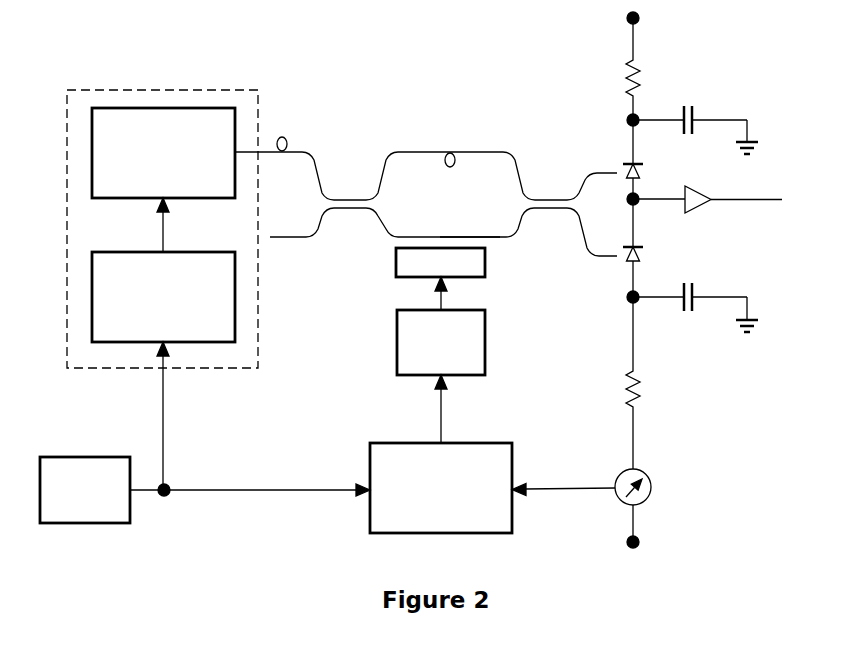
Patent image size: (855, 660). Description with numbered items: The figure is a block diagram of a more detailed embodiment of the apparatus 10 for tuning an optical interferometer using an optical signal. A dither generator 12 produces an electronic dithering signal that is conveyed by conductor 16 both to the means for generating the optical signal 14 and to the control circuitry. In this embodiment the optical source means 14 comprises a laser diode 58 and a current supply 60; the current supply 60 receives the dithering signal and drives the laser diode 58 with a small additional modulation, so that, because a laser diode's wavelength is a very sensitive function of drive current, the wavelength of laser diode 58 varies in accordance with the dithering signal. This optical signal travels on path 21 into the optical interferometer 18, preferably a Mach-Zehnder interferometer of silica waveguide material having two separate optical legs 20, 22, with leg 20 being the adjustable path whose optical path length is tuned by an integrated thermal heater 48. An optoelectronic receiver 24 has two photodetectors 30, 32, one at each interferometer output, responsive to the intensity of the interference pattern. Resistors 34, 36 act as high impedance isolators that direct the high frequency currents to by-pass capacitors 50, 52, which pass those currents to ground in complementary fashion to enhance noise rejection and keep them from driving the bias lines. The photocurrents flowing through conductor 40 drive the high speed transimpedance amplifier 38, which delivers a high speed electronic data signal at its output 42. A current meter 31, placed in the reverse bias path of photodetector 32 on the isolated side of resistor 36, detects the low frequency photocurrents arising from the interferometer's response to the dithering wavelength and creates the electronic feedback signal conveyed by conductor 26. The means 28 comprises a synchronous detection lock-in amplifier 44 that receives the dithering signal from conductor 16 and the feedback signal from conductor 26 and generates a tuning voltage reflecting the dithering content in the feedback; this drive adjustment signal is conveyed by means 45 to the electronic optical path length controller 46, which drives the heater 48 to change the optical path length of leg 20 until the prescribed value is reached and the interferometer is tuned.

The apparatus for tuning an optical interferometer 10 is at (357, 122).
The dither generator 12 is at (85, 490).
The means for generating the optical signal 14 is at (158, 90).
The conductor 16 is at (245, 488).
The optical interferometer 18 is at (443, 184).
The leg 20 is at (480, 235).
The path 21 is at (292, 150).
The leg 22 is at (423, 151).
The optoelectronic receiver 24 is at (598, 140).
The conductor 26 is at (564, 486).
The means responsive to the dithering signal and feedback signal 28 is at (377, 403).
The photodetector 30 is at (641, 172).
The current meter 31 is at (654, 482).
The photodetector 32 is at (642, 255).
The resistor 34 is at (645, 74).
The resistor 36 is at (645, 382).
The transimpedance amplifier 38 is at (700, 185).
The conductor 40 is at (665, 203).
The output 42 is at (768, 198).
The synchronous detection lock-in amplifier 44 is at (441, 488).
The means conveying the drive adjustment signal 45 is at (443, 423).
The electronic optical path length controller 46 is at (441, 342).
The thermal heater 48 is at (485, 262).
The capacitor 50 is at (695, 112).
The capacitor 52 is at (695, 289).
The laser diode 58 is at (163, 153).
The current supply 60 is at (163, 297).